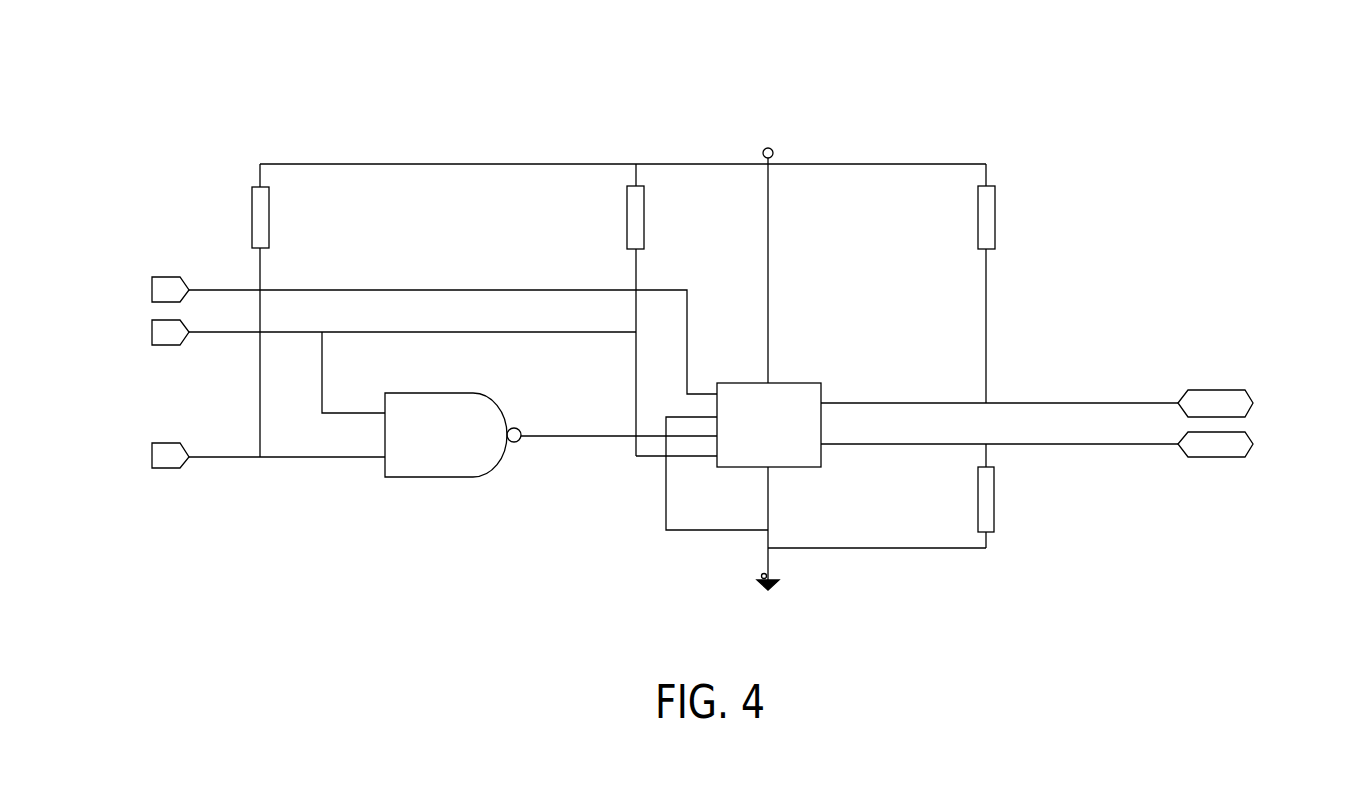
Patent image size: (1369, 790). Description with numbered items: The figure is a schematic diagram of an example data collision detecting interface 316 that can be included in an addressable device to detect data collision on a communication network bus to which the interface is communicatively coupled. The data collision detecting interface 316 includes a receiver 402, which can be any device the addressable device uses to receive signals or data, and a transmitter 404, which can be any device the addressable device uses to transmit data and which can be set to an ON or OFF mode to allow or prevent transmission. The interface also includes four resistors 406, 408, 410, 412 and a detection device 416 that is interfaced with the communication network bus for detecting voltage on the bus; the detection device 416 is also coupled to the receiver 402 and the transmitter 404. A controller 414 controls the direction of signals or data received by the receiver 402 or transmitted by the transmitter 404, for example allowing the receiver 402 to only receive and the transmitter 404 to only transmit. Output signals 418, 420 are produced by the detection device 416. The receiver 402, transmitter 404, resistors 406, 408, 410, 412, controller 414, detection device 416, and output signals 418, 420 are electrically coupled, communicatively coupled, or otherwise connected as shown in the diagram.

The data collision detecting interface 316 is at (292, 88).
The receiver 402 is at (152, 288).
The transmitter 404 is at (152, 333).
The resistor 406 is at (252, 207).
The resistor 408 is at (626, 220).
The resistor 410 is at (978, 220).
The resistor 412 is at (993, 502).
The controller 414 is at (152, 454).
The detection device 416 is at (753, 382).
The output signal 418 is at (1255, 403).
The output signal 420 is at (1255, 445).